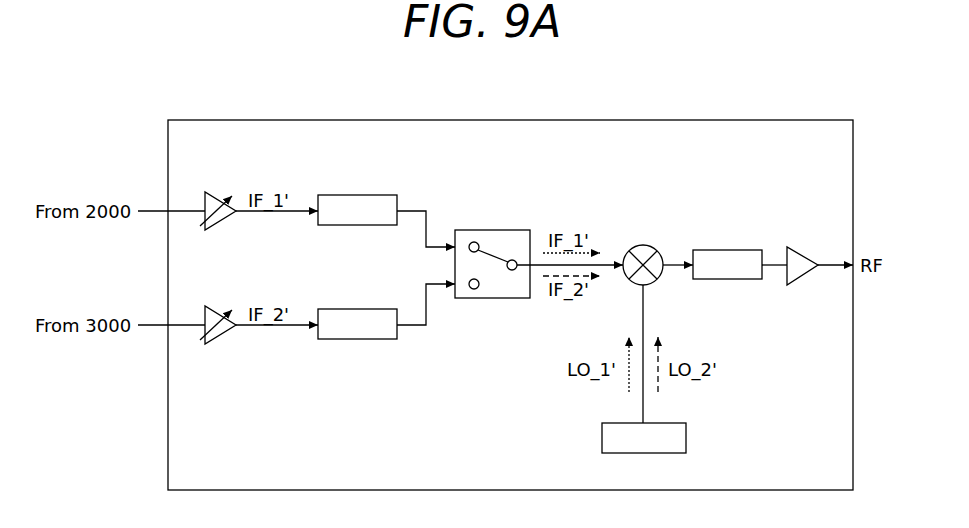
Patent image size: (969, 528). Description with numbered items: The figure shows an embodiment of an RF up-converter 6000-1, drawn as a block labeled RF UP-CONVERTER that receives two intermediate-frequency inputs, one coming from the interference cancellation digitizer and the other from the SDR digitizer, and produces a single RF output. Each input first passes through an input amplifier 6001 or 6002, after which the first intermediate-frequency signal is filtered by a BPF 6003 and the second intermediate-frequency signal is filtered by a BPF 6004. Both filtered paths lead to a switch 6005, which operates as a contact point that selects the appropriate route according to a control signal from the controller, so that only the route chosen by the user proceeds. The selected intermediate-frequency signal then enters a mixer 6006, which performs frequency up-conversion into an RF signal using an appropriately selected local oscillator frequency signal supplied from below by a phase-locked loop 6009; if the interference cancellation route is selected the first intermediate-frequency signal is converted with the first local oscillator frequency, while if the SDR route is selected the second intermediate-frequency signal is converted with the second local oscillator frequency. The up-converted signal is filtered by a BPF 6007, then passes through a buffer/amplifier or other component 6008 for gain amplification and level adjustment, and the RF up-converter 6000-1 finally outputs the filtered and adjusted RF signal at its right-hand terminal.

The RF up-converter 6000-1 is at (470, 104).
The amplifier 6001 is at (210, 192).
The amplifier 6002 is at (210, 306).
The BPF 6003 is at (368, 179).
The BPF 6004 is at (360, 308).
The switch 6005 is at (487, 298).
The mixer 6006 is at (639, 244).
The BPF 6007 is at (723, 250).
The buffer/amplifier 6008 is at (790, 248).
The phase-locked loop PLL_2 6009 is at (602, 434).